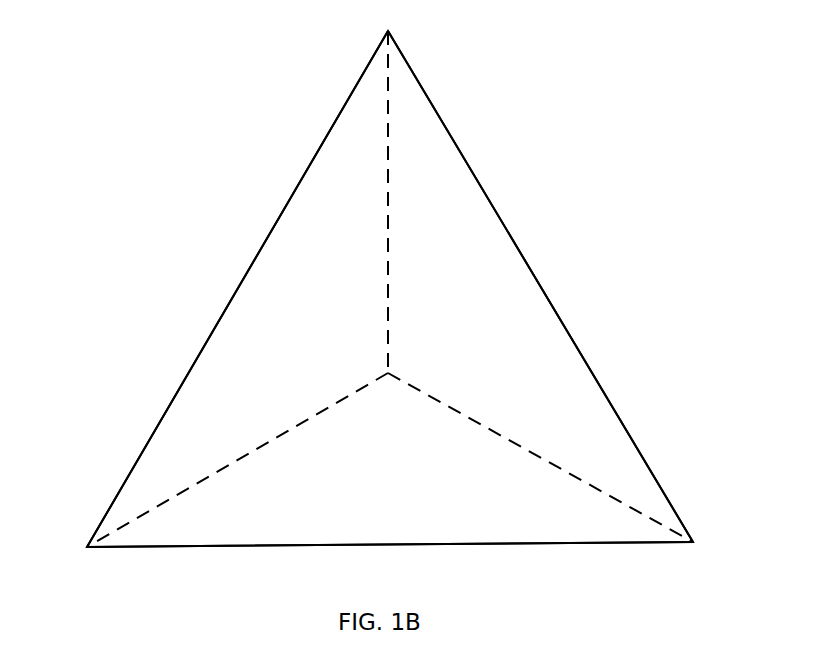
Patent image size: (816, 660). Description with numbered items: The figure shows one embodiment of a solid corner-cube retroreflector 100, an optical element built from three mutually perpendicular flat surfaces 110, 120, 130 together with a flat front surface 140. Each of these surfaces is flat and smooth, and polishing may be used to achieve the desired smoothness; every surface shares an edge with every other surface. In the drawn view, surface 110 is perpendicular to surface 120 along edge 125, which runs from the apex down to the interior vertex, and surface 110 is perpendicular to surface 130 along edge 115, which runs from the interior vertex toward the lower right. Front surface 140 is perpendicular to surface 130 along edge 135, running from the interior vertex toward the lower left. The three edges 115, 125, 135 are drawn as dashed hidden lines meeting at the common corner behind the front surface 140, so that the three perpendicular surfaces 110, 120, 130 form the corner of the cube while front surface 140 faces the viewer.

The solid corner-cube retroreflector 100 is at (515, 572).
The flat surface 110 is at (482, 295).
The edge 115 is at (588, 482).
The flat surface 120 is at (306, 284).
The edge 125 is at (387, 139).
The flat surface 130 is at (335, 493).
The edge 135 is at (195, 484).
The flat front surface 140 is at (414, 254).